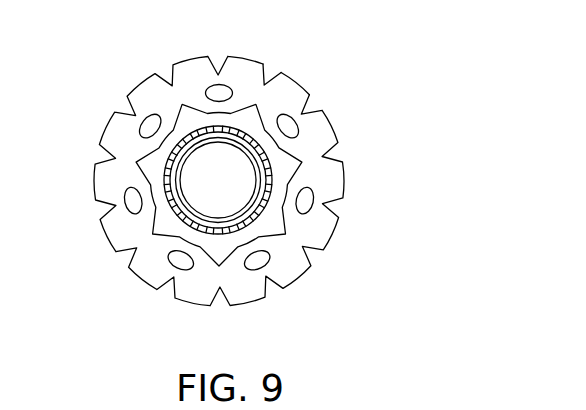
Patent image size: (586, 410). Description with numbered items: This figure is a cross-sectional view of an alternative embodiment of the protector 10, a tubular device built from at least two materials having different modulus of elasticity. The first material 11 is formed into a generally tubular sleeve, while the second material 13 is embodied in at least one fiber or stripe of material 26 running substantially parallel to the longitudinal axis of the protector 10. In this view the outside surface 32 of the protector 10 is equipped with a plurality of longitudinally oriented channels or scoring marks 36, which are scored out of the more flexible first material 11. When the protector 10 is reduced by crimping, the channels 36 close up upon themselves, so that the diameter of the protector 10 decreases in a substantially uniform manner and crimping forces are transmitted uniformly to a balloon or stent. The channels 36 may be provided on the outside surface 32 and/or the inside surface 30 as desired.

The protector 10 is at (355, 268).
The first material 11 is at (146, 92).
The second material 13 is at (124, 206).
The fiber or stripe of material 26 is at (168, 267).
The inside surface 30 is at (218, 118).
The outside surface 32 is at (302, 87).
The channels or scoring marks 36 is at (264, 83).